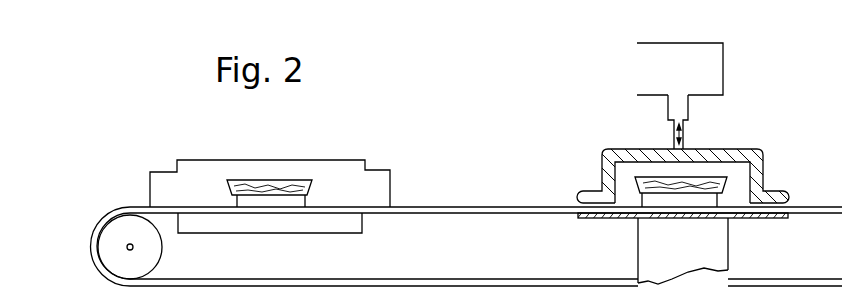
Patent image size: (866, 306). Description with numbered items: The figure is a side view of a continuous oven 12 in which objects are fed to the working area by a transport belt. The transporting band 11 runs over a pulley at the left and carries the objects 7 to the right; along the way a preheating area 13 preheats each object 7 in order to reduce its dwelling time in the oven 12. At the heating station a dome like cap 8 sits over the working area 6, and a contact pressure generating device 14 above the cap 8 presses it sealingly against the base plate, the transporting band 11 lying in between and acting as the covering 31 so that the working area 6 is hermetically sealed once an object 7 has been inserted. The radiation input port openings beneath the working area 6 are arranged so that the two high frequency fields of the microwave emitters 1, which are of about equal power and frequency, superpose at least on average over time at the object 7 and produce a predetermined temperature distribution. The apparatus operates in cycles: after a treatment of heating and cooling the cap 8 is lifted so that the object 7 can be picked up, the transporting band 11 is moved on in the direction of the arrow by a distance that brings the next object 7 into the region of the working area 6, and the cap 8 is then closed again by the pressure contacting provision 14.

The microwave emitter 1 is at (722, 256).
The working area 6 is at (640, 170).
The object 7 is at (723, 183).
The dome like cap 8 is at (710, 152).
The transporting band 11 is at (434, 192).
The continuous oven 12 is at (772, 145).
The preheating area 13 is at (320, 168).
The contact pressure generating device 14 is at (710, 76).
The covering 31 is at (786, 210).